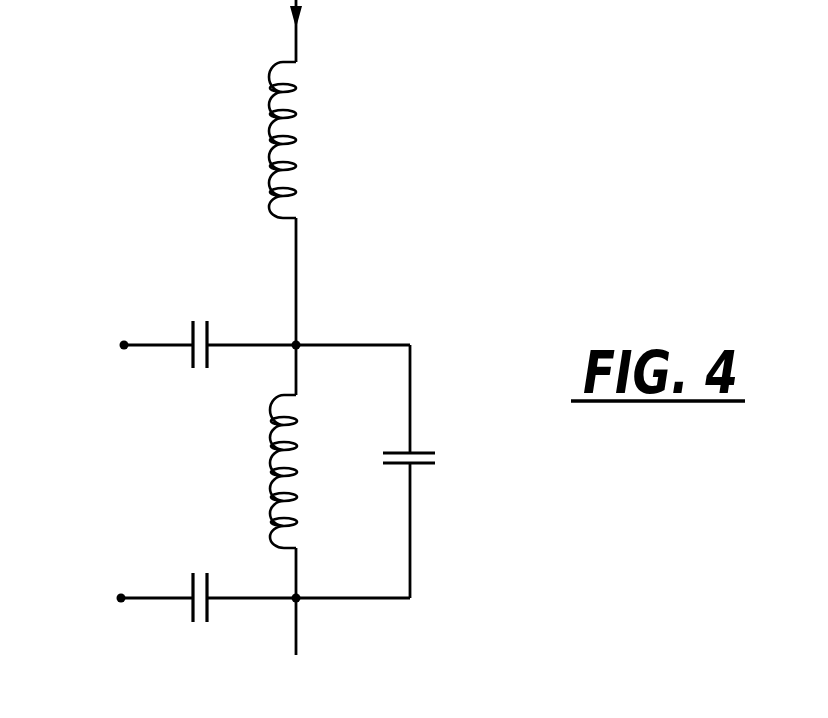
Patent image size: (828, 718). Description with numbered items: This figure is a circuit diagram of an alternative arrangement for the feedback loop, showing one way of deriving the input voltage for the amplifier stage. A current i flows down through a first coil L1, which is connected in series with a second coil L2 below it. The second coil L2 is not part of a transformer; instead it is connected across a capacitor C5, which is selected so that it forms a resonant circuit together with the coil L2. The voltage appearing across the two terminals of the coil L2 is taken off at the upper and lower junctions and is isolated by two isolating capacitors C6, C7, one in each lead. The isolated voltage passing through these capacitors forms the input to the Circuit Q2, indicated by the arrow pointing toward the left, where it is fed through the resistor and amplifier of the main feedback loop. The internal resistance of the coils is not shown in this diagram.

The Circuit Q2 is at (230, 472).
The coil L1 is at (299, 140).
The second coil L2 is at (302, 471).
The capacitor C5 is at (414, 444).
The isolating capacitor C6 is at (216, 596).
The isolating capacitor C7 is at (216, 343).
The current i is at (302, 21).